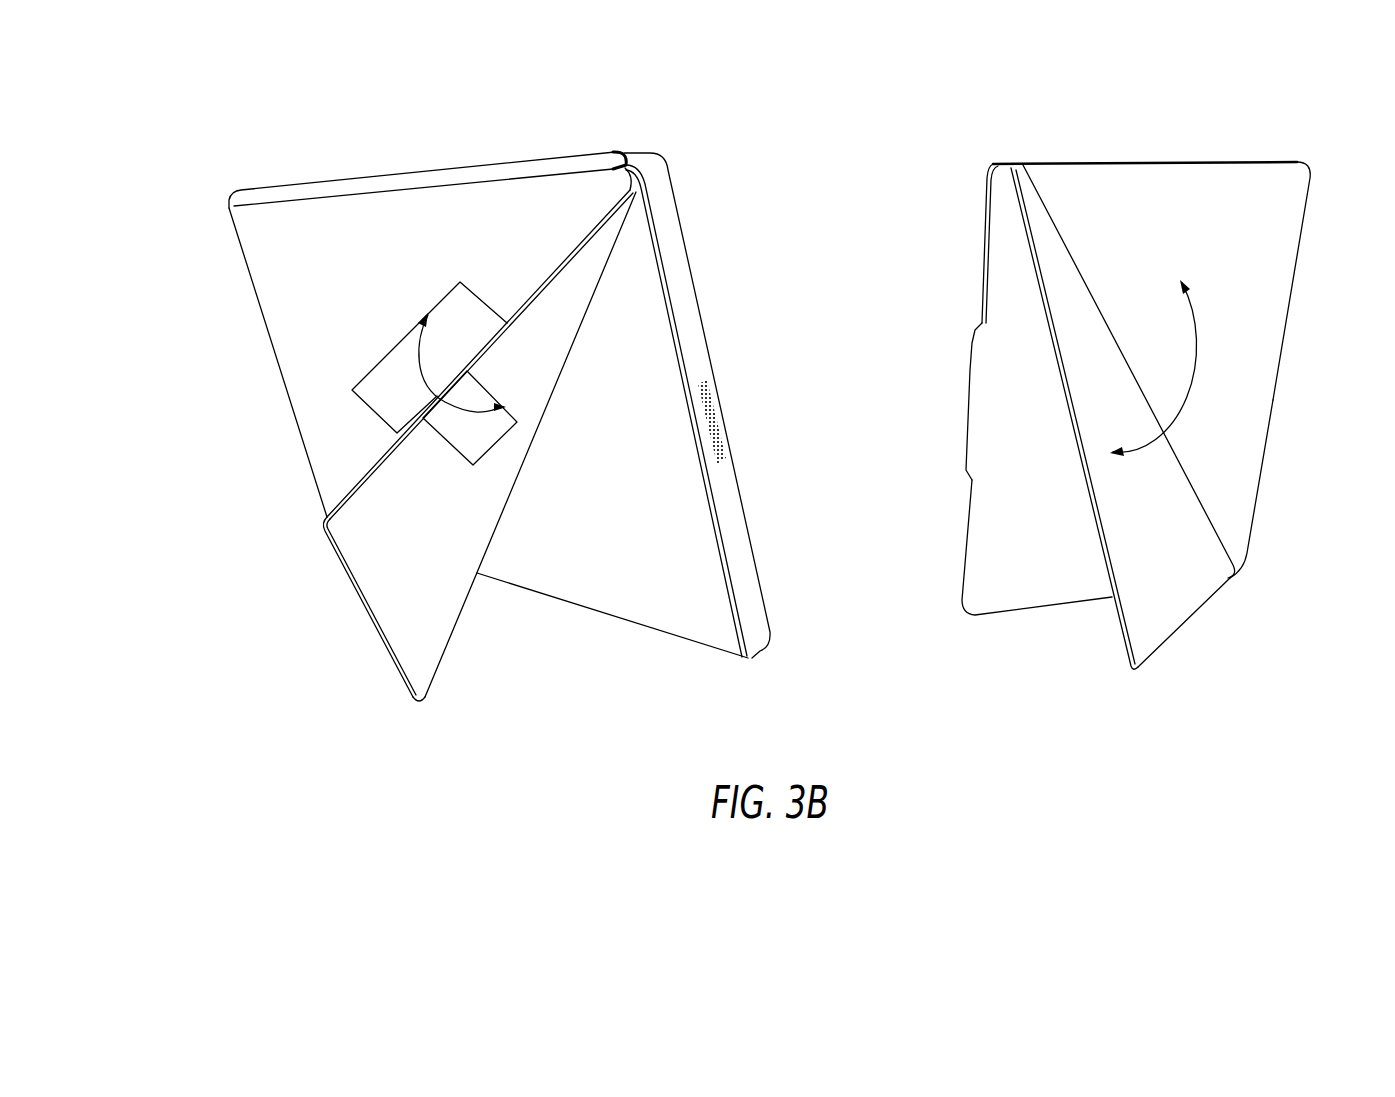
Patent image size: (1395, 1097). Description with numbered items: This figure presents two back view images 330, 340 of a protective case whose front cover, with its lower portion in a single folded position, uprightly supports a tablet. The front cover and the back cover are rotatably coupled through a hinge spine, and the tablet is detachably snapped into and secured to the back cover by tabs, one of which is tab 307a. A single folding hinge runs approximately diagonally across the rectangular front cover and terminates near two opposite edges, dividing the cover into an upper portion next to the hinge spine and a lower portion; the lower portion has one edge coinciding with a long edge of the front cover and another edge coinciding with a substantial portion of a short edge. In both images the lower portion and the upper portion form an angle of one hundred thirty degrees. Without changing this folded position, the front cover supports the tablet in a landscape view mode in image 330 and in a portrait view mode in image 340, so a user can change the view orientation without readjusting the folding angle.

The tab 307a is at (978, 356).
The back view image 330 is at (432, 730).
The back view image 340 is at (1143, 691).